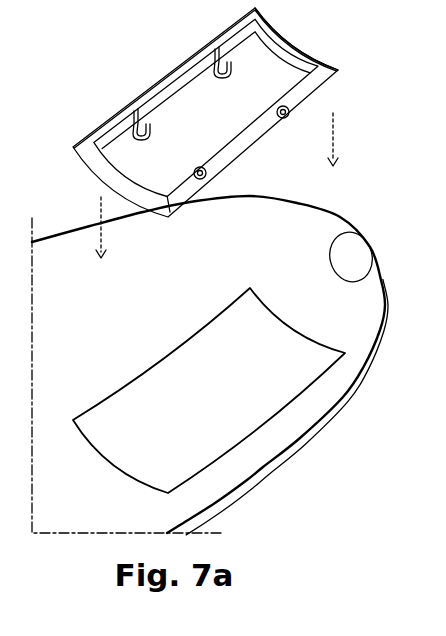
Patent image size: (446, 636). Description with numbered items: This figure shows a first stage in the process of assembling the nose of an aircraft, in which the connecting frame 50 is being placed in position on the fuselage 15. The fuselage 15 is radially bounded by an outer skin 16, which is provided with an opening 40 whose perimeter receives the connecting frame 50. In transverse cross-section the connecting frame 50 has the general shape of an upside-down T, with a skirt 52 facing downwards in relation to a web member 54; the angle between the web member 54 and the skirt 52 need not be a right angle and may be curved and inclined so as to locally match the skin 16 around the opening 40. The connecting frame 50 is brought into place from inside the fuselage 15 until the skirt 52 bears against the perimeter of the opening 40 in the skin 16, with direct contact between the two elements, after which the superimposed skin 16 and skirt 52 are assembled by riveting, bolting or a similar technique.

The fuselage 15 is at (363, 220).
The outer skin 16 is at (80, 495).
The opening 40 is at (258, 380).
The connecting frame 50 is at (241, 133).
The skirt 52 is at (345, 77).
The web member 54 is at (113, 126).